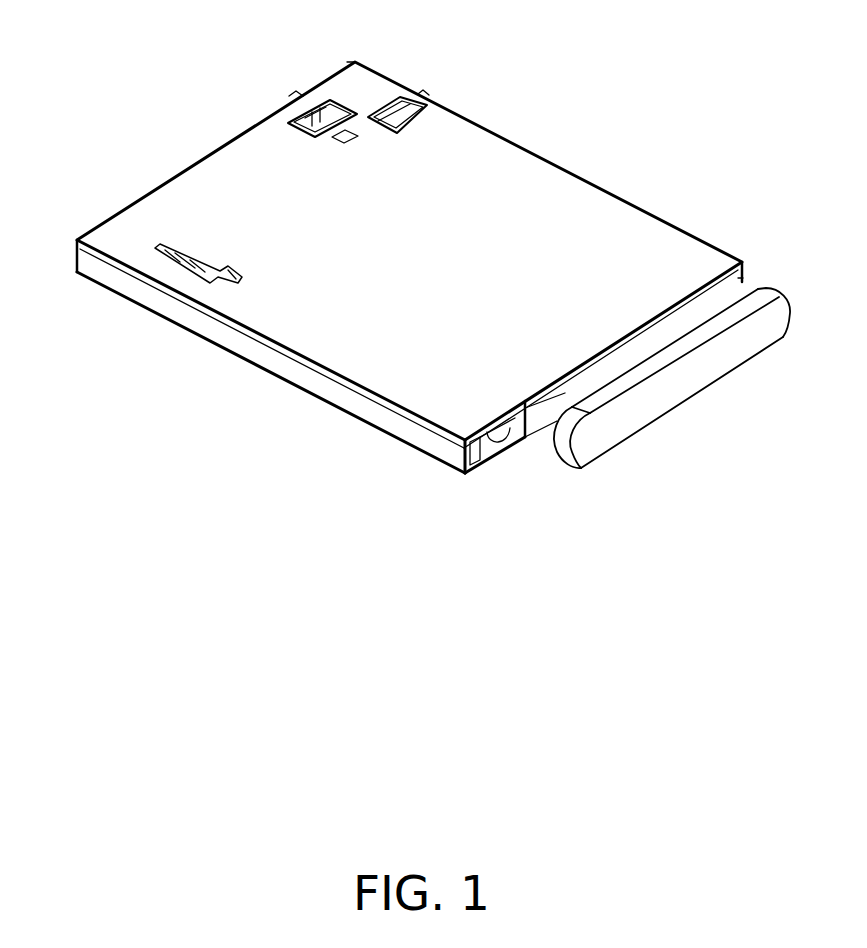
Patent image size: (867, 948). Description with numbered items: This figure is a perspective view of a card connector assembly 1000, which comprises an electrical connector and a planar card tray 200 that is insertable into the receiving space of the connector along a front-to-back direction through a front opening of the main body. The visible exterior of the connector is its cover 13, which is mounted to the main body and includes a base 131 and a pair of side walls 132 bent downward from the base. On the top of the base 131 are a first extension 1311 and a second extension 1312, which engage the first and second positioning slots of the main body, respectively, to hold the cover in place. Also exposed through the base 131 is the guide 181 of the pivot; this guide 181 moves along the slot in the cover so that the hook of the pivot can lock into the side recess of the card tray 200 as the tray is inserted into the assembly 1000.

The card connector assembly 1000 is at (403, 241).
The cover 13 is at (410, 241).
The base 131 is at (409, 225).
The side walls 132 is at (300, 377).
The first extension 1311 is at (326, 116).
The second extension 1312 is at (388, 116).
The guide 181 is at (165, 243).
The card tray 200 is at (640, 348).